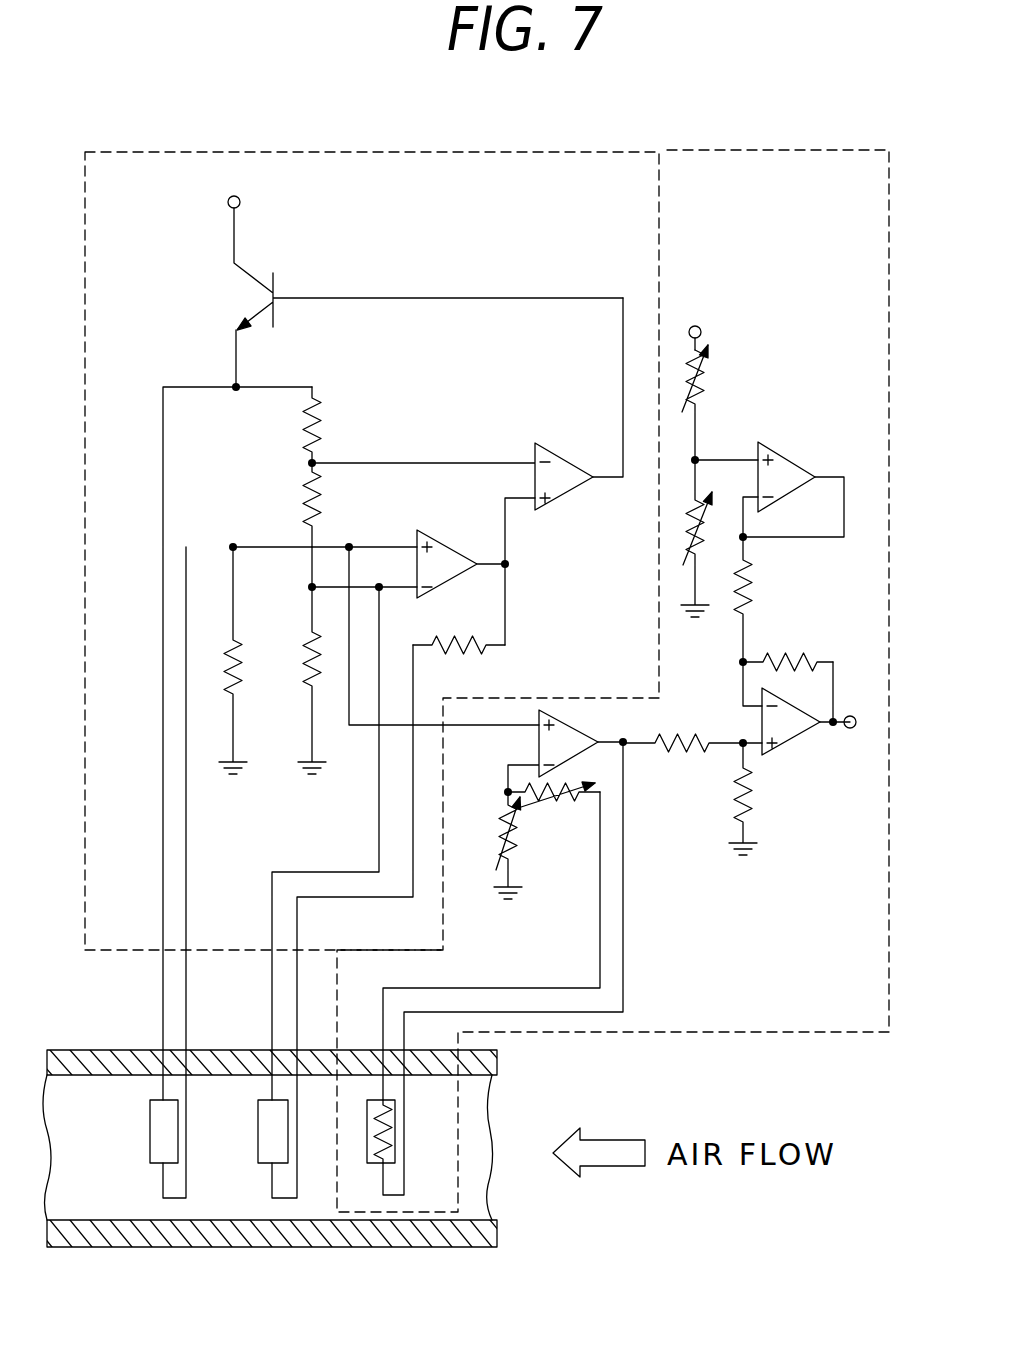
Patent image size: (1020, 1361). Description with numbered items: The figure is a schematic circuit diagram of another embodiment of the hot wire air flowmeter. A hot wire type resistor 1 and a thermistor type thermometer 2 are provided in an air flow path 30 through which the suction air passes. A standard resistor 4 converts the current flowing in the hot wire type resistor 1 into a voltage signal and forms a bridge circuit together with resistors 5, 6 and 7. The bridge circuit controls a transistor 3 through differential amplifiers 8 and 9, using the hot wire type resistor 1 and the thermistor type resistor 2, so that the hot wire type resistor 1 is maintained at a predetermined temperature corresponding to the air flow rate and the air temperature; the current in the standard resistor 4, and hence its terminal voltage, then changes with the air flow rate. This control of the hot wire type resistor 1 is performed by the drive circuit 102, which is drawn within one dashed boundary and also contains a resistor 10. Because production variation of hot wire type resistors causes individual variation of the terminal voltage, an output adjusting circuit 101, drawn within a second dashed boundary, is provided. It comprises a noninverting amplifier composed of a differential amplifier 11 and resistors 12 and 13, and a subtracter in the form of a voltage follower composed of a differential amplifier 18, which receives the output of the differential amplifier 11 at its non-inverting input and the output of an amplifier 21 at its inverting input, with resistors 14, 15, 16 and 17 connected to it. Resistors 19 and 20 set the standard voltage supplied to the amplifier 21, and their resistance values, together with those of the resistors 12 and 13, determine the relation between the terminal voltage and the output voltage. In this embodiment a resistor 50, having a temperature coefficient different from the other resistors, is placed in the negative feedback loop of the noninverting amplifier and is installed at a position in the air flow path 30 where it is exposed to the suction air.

The hot wire type resistor 1 is at (150, 1146).
The thermistor type thermometer 2 is at (258, 1148).
The transistor 3 is at (256, 273).
The standard resistor 4 is at (230, 690).
The resistor 5 is at (324, 422).
The resistor 6 is at (321, 498).
The resistor 7 is at (308, 688).
The differential amplifier 8 is at (438, 546).
The differential amplifier 9 is at (552, 457).
The resistor 10 is at (450, 650).
The differential amplifier 11 is at (582, 726).
The resistor 12 is at (505, 825).
The resistor 13 is at (560, 802).
The resistor 14 is at (680, 739).
The resistor 15 is at (734, 790).
The resistor 16 is at (756, 612).
The resistor 17 is at (794, 658).
The differential amplifier 18 is at (798, 744).
The resistor 19 is at (705, 385).
The resistor 20 is at (683, 520).
The amplifier 21 is at (798, 458).
The air flow path 30 is at (220, 1050).
The resistor 50 is at (367, 1116).
The output adjusting circuit 101 is at (788, 148).
The drive circuit 102 is at (465, 152).